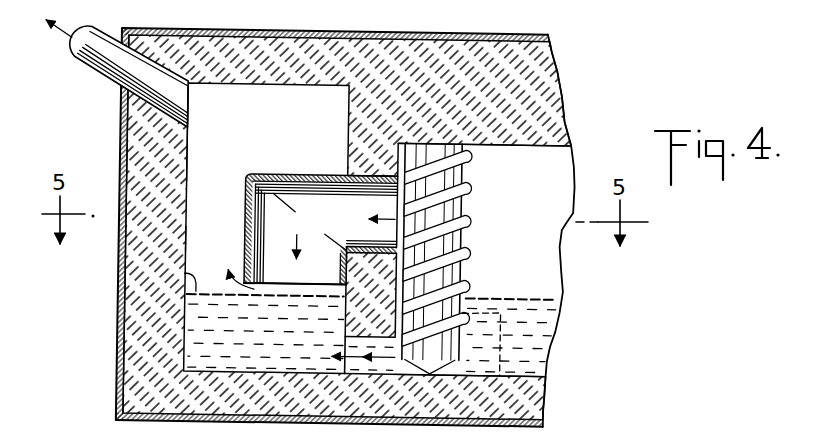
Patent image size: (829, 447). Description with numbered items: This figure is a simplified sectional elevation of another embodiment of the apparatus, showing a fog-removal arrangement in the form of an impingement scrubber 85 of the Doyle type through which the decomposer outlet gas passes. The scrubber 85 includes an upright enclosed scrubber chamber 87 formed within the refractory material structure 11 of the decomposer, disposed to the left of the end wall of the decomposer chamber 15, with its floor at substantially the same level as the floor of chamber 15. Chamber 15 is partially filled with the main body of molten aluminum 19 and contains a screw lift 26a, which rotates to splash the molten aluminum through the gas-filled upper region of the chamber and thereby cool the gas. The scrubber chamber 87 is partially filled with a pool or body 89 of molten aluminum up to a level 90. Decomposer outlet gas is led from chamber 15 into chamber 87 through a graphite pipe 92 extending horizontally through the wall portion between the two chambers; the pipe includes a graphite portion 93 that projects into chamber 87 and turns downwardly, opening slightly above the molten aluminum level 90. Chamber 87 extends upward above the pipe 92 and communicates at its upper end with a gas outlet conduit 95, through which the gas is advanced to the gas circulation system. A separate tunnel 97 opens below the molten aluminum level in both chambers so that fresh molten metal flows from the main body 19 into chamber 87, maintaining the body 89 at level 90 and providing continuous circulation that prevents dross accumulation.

The refractory material structure 11 is at (252, 405).
The second enclosed chamber 15 is at (528, 192).
The molten aluminum 19 is at (530, 348).
The screw lift 26a is at (457, 244).
The impingement scrubber 85 is at (200, 154).
The scrubber chamber 87 is at (190, 237).
The body of molten aluminum 89 is at (200, 333).
The molten aluminum level 90 is at (188, 272).
The pipe 92 is at (360, 172).
The pipe portion 93 is at (246, 200).
The gas outlet conduit 95 is at (116, 73).
The tunnel 97 is at (372, 373).